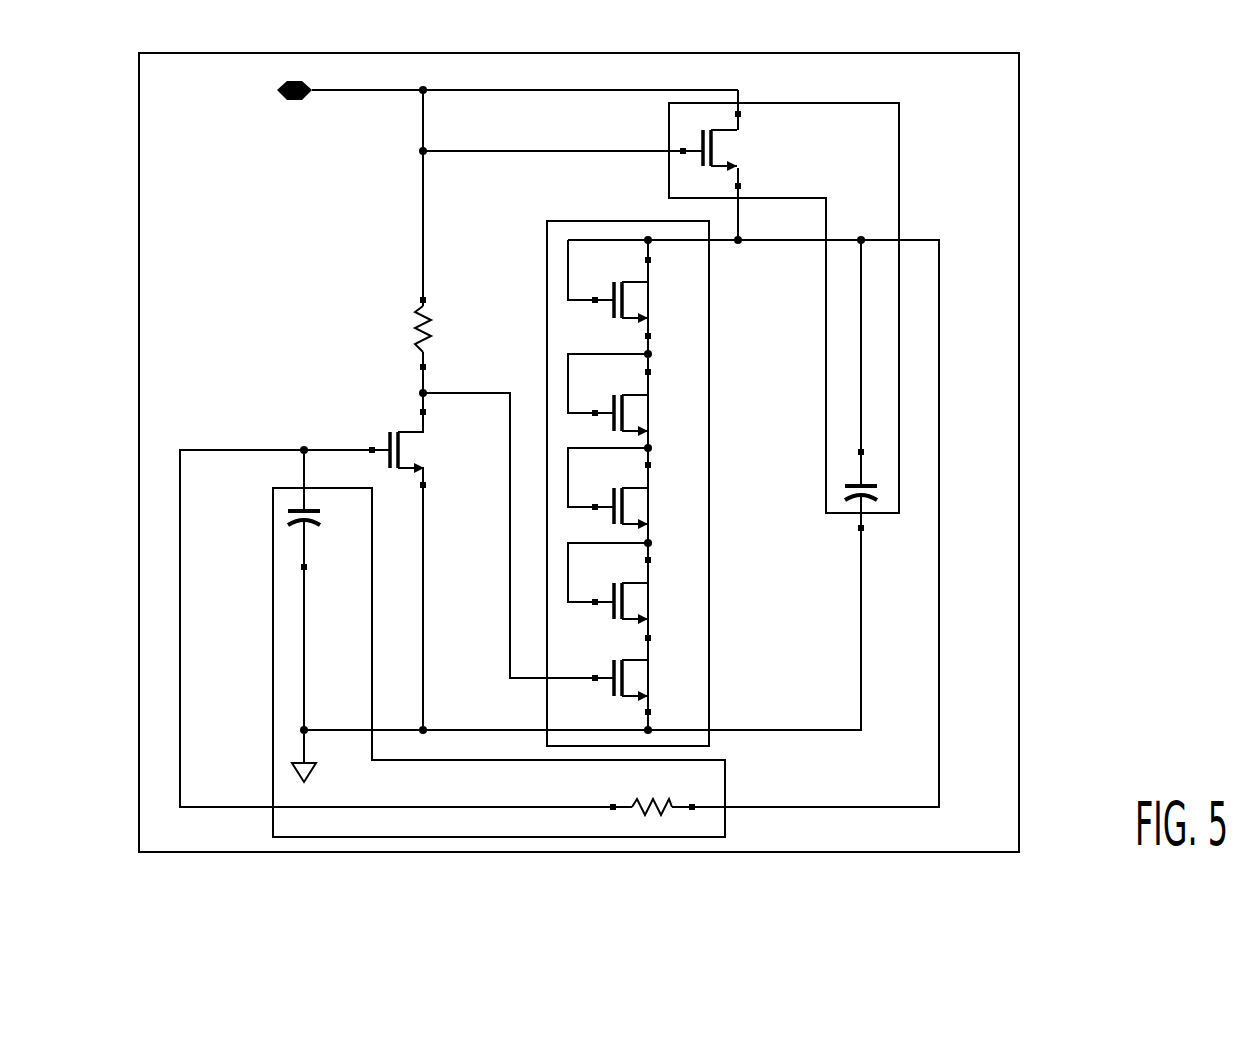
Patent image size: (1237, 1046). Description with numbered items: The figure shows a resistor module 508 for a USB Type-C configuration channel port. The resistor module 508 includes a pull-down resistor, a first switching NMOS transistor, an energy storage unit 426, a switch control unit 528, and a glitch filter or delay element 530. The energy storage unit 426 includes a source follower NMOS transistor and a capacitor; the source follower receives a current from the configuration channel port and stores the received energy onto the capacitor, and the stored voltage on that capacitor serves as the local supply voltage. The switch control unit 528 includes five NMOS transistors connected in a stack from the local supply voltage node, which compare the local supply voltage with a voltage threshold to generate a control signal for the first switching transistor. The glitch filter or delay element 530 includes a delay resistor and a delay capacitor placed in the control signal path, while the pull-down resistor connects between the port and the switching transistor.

The resistor module 508 is at (1019, 150).
The energy storage unit 426 is at (899, 188).
The switch control unit 528 is at (547, 251).
The glitch filter/delay element 530 is at (273, 598).